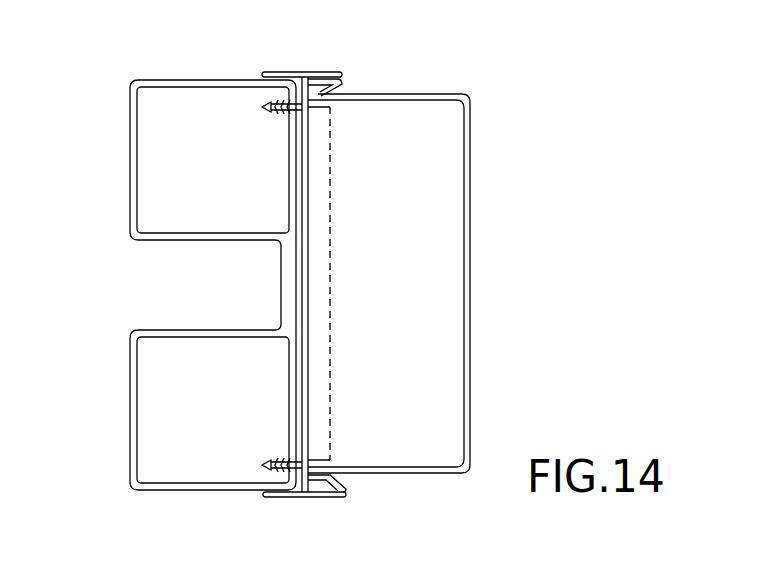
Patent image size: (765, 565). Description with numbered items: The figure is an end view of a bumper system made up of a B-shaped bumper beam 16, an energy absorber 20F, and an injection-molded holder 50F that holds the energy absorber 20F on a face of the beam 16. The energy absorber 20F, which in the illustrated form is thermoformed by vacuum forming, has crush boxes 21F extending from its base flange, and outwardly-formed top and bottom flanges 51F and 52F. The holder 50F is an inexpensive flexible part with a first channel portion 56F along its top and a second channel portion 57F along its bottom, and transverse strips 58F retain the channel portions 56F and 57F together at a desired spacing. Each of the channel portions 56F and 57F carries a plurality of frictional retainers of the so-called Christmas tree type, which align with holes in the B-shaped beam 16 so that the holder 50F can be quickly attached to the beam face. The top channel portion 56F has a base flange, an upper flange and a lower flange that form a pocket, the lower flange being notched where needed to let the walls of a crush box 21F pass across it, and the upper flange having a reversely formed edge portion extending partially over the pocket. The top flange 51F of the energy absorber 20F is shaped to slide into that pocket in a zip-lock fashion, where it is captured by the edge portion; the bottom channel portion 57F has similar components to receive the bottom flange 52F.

The B-shaped bumper beam 16 is at (150, 79).
The energy absorber 20F is at (462, 259).
The crush boxes 21F is at (472, 300).
The holder 50F is at (326, 274).
The top flange 51F is at (328, 80).
The bottom flange 52F is at (340, 487).
The first channel portion 56F is at (292, 72).
The second channel portion 57F is at (306, 498).
The transverse strips 58F is at (312, 186).